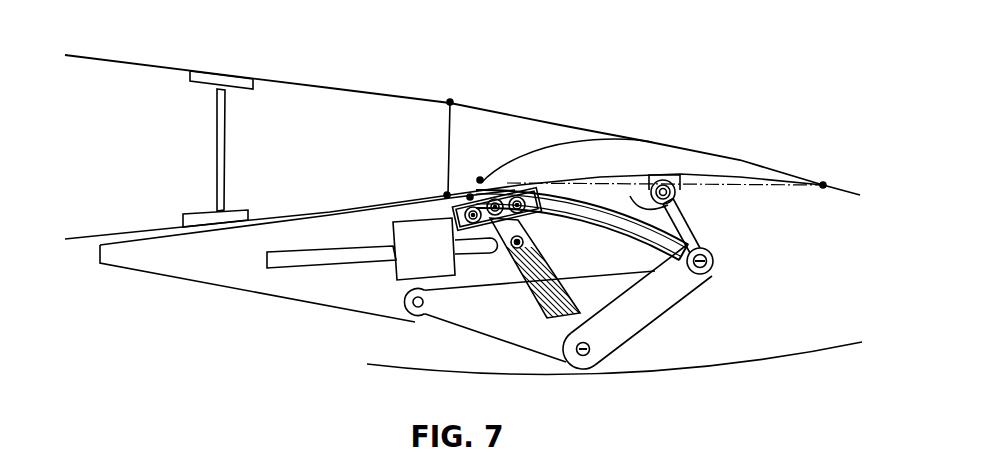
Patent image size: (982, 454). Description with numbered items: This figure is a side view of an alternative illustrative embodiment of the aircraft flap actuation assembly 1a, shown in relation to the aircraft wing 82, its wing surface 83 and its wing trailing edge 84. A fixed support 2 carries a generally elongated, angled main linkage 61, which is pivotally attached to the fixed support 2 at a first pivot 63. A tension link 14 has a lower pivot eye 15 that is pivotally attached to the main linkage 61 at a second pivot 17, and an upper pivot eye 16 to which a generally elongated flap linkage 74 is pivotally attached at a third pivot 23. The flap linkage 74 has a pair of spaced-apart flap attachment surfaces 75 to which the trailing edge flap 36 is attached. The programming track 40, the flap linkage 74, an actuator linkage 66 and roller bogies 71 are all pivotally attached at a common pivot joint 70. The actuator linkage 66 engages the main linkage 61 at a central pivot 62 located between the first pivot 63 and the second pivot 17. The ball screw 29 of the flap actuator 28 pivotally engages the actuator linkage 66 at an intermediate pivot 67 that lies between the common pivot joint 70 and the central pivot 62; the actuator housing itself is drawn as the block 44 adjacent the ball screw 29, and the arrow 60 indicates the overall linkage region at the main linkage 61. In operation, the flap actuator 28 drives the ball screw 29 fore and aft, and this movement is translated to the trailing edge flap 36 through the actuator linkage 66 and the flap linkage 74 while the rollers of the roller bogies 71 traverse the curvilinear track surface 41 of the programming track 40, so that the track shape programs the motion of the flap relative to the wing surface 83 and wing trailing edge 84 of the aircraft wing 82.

The aircraft flap actuation assembly 1a is at (705, 132).
The fixed support 2 is at (392, 319).
The tension link 14 is at (697, 222).
The lower pivot eye 15 is at (718, 258).
The upper pivot eye 16 is at (755, 163).
The second pivot 17 is at (712, 272).
The third pivot 23 is at (648, 186).
The flap actuator 28 is at (303, 237).
The ball screw 29 is at (352, 255).
The trailing edge flap 36 is at (575, 157).
The programming track 40 is at (619, 243).
The curvilinear track surface 41 is at (672, 283).
The actuator 44 is at (412, 268).
The linkage mechanism 60 is at (699, 297).
The main linkage 61 is at (635, 340).
The central pivot 62 is at (570, 353).
The first pivot 63 is at (428, 308).
The actuator linkage 66 is at (530, 285).
The intermediate pivot 67 is at (523, 243).
The common pivot joint 70 is at (469, 196).
The roller bogie 71 is at (447, 194).
The flap linkage 74 is at (678, 203).
The flap attachment surface 75 is at (492, 195).
The aircraft wing 82 is at (375, 94).
The wing surface 83 is at (427, 100).
The wing trailing edge 84 is at (823, 183).